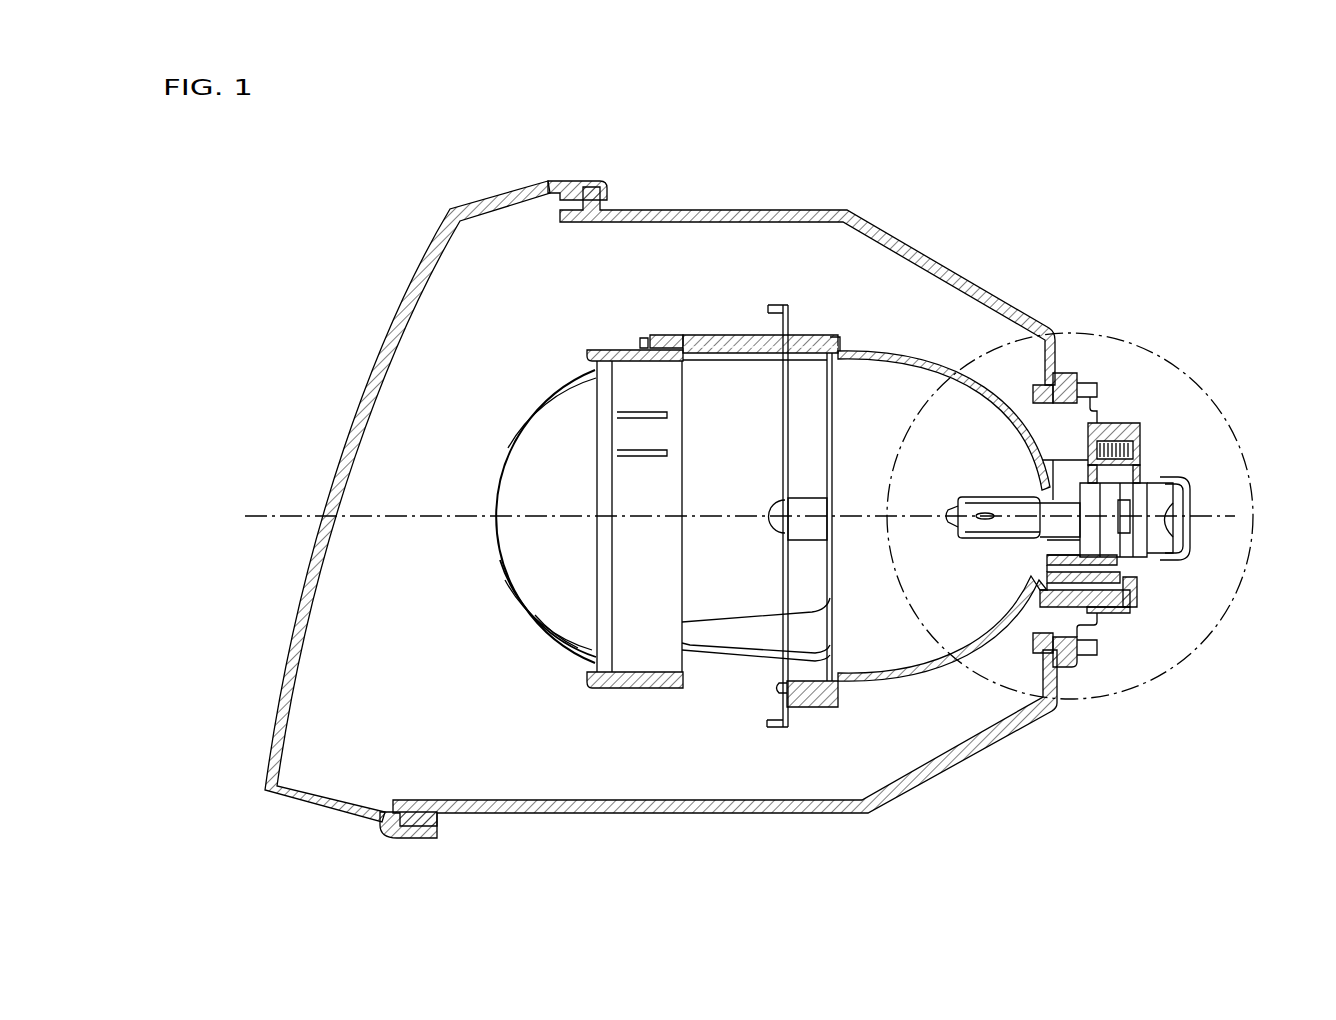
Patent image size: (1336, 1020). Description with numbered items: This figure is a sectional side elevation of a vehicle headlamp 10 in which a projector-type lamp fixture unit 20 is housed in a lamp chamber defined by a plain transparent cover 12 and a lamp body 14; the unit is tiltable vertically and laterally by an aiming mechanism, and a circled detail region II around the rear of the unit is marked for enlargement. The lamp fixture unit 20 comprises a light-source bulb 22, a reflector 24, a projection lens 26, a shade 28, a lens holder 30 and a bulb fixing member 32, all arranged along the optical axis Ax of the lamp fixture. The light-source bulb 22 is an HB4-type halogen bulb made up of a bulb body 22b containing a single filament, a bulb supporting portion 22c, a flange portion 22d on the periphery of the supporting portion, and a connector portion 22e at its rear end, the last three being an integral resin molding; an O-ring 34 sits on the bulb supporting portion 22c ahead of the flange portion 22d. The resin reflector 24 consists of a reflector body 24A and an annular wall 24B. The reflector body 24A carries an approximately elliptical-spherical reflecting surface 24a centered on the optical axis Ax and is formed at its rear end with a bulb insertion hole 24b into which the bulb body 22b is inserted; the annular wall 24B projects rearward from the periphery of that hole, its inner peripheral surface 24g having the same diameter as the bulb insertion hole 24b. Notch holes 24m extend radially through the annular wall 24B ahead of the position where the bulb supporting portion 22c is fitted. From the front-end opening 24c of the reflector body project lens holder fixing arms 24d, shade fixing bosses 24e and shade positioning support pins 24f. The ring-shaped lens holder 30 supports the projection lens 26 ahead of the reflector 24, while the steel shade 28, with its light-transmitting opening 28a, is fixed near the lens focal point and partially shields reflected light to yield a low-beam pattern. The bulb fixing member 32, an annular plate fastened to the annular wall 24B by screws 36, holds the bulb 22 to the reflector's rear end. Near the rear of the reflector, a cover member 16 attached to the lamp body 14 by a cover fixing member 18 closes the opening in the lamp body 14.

The vehicle headlamp 10 is at (345, 200).
The plain transparent cover 12 is at (402, 305).
The lamp body 14 is at (918, 235).
The cover member 16 is at (1125, 415).
The cover fixing member 18 is at (1025, 392).
The lamp fixture unit 20 is at (548, 345).
The light-source bulb 22 is at (1071, 522).
The bulb body 22b is at (982, 538).
The bulb supporting portion 22c is at (1053, 500).
The flange portion 22d is at (1141, 471).
The connector portion 22e is at (1172, 527).
The reflector 24 is at (930, 348).
The reflecting surface 24a is at (985, 396).
The bulb insertion hole 24b is at (1040, 495).
The front-end opening 24c is at (828, 417).
The lens holder fixing arm 24d is at (733, 338).
The shade fixing boss 24e is at (808, 503).
The shade positioning support pin 24f is at (812, 707).
The inner peripheral surface 24g is at (1067, 540).
The notch hole 24m is at (1070, 473).
The reflector body 24A is at (944, 565).
The annular wall 24B is at (1059, 557).
The projection lens 26 is at (515, 425).
The shade 28 is at (797, 322).
The light-transmitting opening 28a is at (783, 450).
The lens holder 30 is at (617, 345).
The bulb fixing member 32 is at (1145, 594).
The O-ring 34 is at (1140, 562).
The screw 36 is at (1142, 448).
The optical axis Ax is at (445, 505).
The section indication circle II is at (1138, 300).